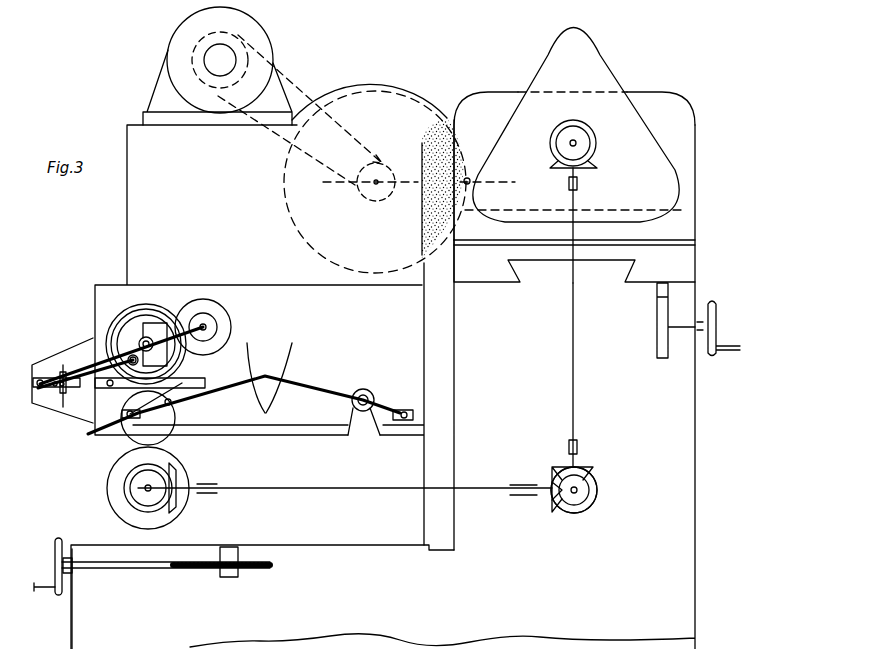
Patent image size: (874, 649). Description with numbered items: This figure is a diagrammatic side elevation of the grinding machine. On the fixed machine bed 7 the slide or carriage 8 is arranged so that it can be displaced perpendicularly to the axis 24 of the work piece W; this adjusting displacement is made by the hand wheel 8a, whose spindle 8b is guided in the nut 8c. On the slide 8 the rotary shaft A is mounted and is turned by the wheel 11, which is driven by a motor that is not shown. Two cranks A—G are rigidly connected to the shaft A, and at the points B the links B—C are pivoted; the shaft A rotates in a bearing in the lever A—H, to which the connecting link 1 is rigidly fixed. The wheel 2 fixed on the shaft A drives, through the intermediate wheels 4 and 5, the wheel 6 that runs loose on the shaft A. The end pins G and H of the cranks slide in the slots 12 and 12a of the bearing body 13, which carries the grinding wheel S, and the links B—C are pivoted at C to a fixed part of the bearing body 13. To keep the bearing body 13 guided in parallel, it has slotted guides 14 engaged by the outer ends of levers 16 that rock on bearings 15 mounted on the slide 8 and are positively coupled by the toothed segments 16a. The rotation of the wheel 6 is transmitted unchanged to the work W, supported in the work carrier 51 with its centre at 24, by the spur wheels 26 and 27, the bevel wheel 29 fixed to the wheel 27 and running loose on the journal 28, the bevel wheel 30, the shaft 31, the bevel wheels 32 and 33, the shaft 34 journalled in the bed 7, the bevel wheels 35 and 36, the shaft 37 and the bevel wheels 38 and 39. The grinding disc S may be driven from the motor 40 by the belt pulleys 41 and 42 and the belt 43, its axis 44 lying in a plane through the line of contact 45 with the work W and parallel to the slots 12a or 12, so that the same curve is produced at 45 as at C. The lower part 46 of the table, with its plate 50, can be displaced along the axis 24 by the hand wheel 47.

The connecting link 1 is at (180, 305).
The wheel 2 is at (127, 323).
The intermediate wheel 4 is at (232, 328).
The intermediate wheel 5 is at (217, 317).
The wheel 6 is at (157, 300).
The machine bed 7 is at (696, 566).
The slide 8 is at (100, 526).
The hand wheel 8a is at (55, 566).
The spindle 8b is at (148, 568).
The nut 8c is at (228, 578).
The wheel 11 is at (125, 298).
The slot 12 is at (130, 363).
The slot 12a is at (53, 382).
The bearing body 13 is at (417, 380).
The slotted guide 14 is at (395, 447).
The bearing 15 is at (362, 443).
The lever 16 is at (308, 388).
The toothed segment 16a is at (269, 371).
The axis of the work piece 24 is at (580, 143).
The spur wheel 26 is at (98, 466).
The spur wheel 27 is at (188, 500).
The journal 28 is at (143, 497).
The bevel wheel 29 is at (162, 512).
The bevel wheel 30 is at (176, 509).
The shaft 31 is at (308, 487).
The bevel wheel 32 is at (553, 503).
The bevel wheel 33 is at (592, 500).
The bevel wheel 35 is at (574, 490).
The shaft 34 is at (575, 500).
The bevel wheel 36 is at (596, 463).
The shaft 37 is at (577, 386).
The bevel wheel 38 is at (587, 173).
The bevel wheel 39 is at (581, 125).
The motor 40 is at (158, 93).
The belt pulley 41 is at (267, 29).
The belt pulley 42 is at (367, 200).
The belt 43 is at (357, 140).
The axis of the grinding disc 44 is at (377, 181).
The line of contact 45 is at (469, 180).
The lower part of the table 46 is at (690, 273).
The hand wheel 47 is at (708, 310).
The table plate 50 is at (690, 232).
The work carrier 51 is at (686, 128).
The rotary shaft A is at (140, 340).
The pivot point B is at (130, 358).
The pivot point C is at (32, 403).
The crank end pin G is at (108, 386).
The crank end pin H is at (38, 382).
The grinding wheel S is at (427, 93).
The work piece W is at (607, 53).